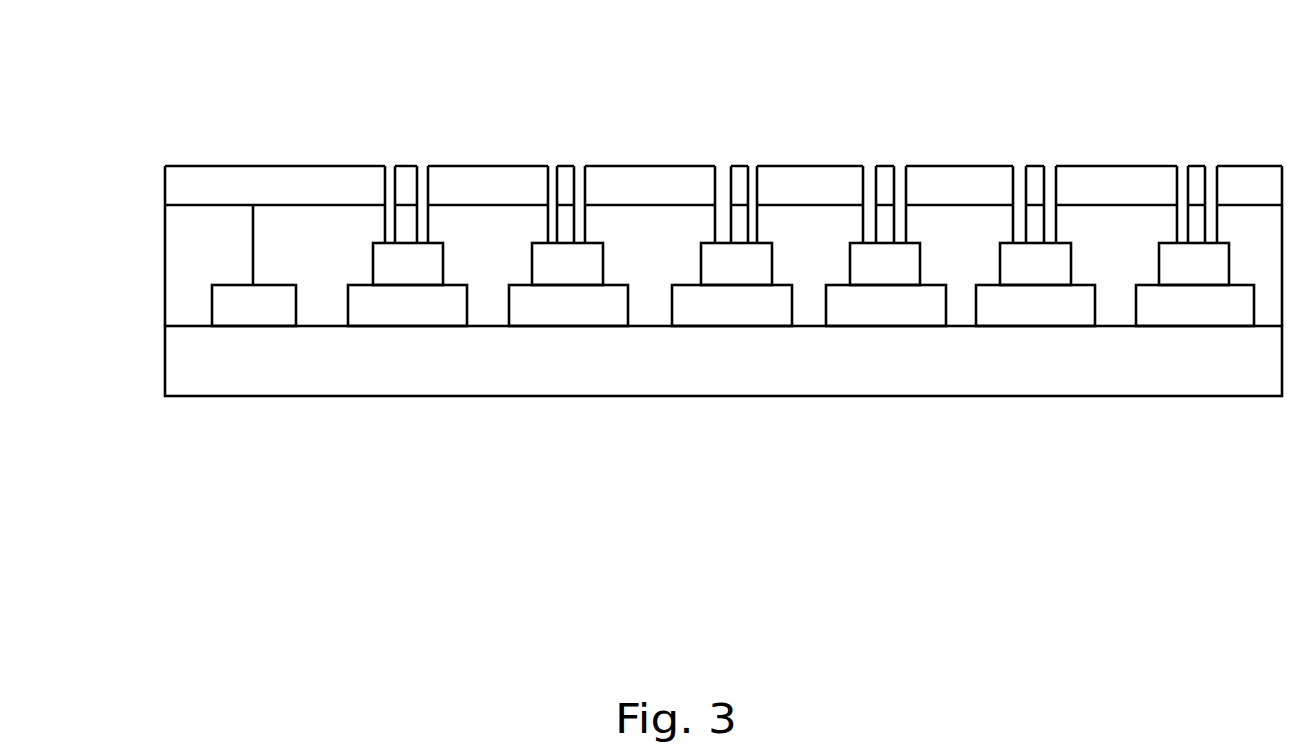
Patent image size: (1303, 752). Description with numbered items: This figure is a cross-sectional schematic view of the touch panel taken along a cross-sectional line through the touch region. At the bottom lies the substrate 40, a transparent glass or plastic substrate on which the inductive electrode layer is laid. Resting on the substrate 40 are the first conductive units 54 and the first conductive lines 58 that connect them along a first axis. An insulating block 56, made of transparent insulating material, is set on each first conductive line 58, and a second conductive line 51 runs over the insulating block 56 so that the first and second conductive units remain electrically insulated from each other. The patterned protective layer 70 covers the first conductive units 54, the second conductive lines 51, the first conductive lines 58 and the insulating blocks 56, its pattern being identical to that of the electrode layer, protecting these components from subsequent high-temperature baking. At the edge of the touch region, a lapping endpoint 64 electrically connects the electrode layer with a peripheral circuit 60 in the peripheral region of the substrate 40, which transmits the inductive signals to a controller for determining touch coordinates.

The substrate 40 is at (1205, 378).
The second conductive line 51 is at (738, 232).
The first conductive unit 54 is at (823, 230).
The insulating block 56 is at (572, 268).
The first conductive line 58 is at (403, 309).
The peripheral circuit 60 is at (190, 280).
The lapping endpoint 64 is at (253, 308).
The patterned protective layer 70 is at (494, 180).